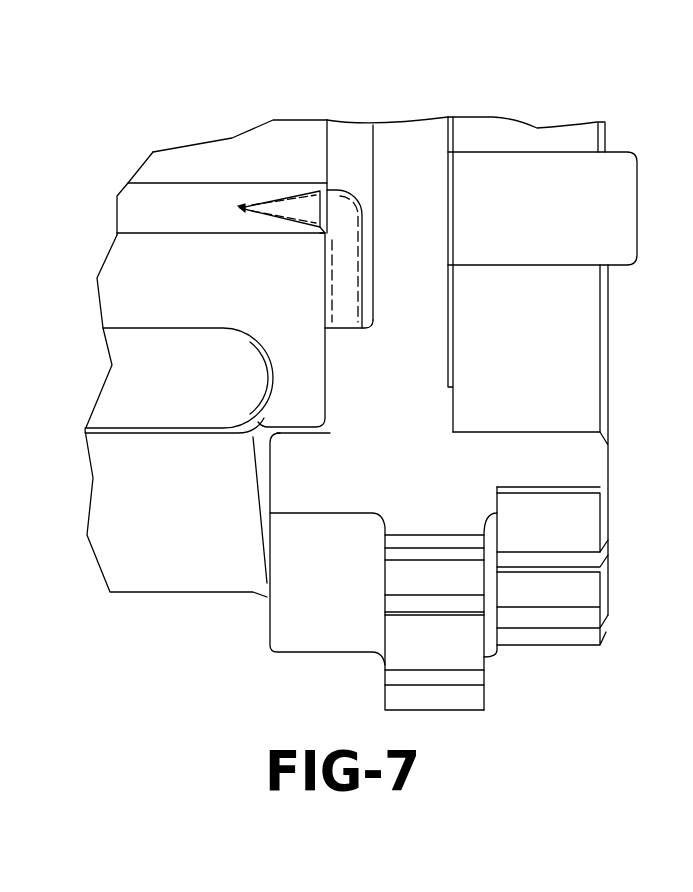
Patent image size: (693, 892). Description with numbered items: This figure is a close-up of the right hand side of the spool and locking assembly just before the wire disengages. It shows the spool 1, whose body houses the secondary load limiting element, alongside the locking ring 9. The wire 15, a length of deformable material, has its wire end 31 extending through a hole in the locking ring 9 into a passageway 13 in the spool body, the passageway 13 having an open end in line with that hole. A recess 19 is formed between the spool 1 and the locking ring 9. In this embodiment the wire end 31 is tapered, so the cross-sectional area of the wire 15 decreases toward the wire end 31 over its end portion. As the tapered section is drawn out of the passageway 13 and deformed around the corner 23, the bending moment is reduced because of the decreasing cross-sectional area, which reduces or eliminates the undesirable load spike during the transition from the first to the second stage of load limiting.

The spool 1 is at (160, 301).
The locking ring 9 is at (399, 410).
The passageway 13 is at (140, 215).
The wire 15 is at (348, 300).
The recess 19 is at (345, 167).
The corner 23 is at (325, 234).
The wire end 31 is at (237, 210).